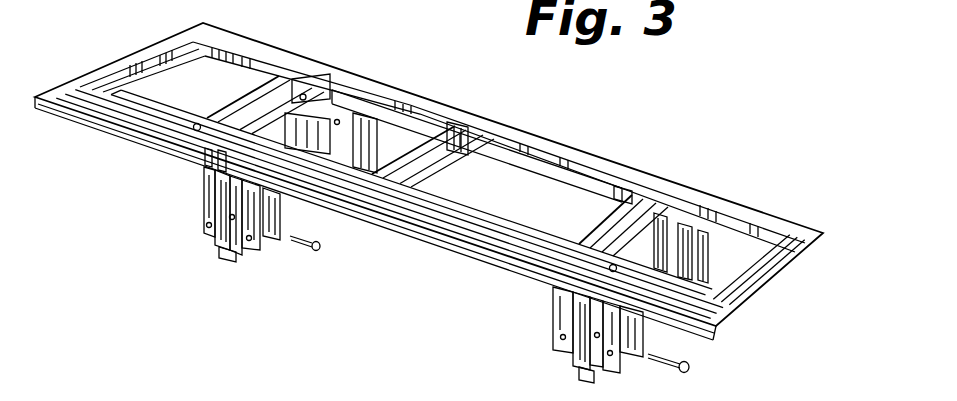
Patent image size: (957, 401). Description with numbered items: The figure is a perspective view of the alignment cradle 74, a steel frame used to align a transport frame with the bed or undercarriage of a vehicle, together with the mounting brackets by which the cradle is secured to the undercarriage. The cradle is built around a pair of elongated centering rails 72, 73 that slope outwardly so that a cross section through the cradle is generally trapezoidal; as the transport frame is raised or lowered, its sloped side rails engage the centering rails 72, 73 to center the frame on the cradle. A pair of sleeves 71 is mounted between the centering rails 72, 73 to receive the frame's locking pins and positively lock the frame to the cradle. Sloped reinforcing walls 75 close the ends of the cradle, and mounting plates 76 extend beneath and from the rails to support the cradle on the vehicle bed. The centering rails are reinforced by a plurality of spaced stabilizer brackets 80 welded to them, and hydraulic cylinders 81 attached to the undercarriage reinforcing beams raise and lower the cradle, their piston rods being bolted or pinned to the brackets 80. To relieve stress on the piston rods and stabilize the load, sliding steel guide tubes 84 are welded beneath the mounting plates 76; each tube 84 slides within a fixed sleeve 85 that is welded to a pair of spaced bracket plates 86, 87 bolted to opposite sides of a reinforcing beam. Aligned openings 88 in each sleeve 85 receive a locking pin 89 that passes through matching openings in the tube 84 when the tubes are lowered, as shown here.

The sleeve 71 is at (230, 100).
The centering rail 72 is at (493, 227).
The centering rail 73 is at (520, 150).
The alignment cradle 74 is at (122, 151).
The sloped reinforcing wall 75 is at (147, 50).
The mounting plate 76 is at (306, 54).
The stabilizer bracket 80 is at (330, 103).
The hydraulic cylinder 81 is at (333, 107).
The sliding steel guide tube 84 is at (222, 260).
The fixed sleeve 85 is at (218, 204).
The bracket plate 86 is at (203, 177).
The bracket plate 87 is at (273, 238).
The aligned opening 88 is at (593, 327).
The locking pin 89 is at (320, 247).